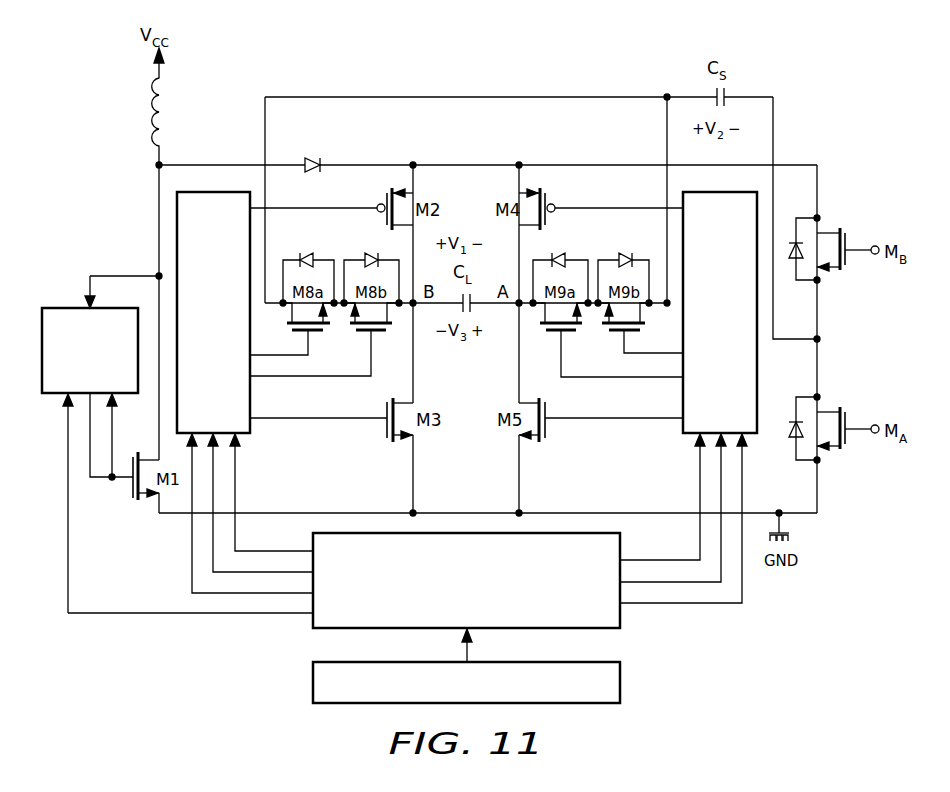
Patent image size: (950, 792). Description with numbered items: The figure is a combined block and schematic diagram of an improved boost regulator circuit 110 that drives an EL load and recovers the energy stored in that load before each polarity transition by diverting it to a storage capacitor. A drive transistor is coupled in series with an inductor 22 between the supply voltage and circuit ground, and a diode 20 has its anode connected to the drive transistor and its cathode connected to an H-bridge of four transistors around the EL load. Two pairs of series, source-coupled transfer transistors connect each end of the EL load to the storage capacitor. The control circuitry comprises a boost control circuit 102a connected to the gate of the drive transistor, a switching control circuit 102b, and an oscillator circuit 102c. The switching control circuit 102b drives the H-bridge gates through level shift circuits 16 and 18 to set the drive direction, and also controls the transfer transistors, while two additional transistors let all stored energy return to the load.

The inductor 22 is at (142, 108).
The diode 20 is at (312, 156).
The improved boost regulator circuit 110 is at (575, 70).
The level shift circuit 16 is at (203, 363).
The level shift circuit 18 is at (710, 363).
The boost control circuit 102a is at (68, 304).
The switching control circuit 102b is at (620, 620).
The oscillator circuit 102c is at (313, 683).